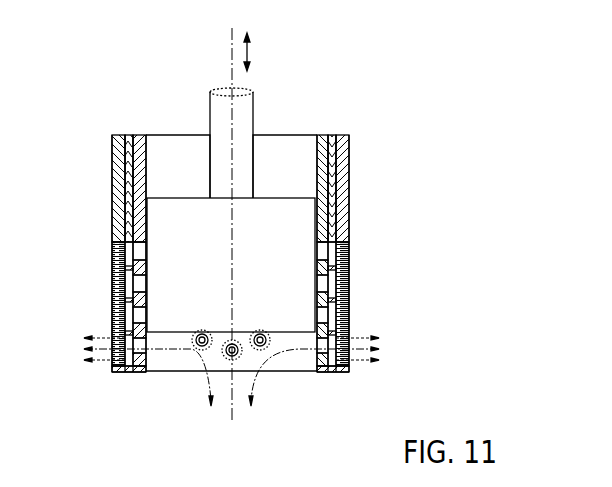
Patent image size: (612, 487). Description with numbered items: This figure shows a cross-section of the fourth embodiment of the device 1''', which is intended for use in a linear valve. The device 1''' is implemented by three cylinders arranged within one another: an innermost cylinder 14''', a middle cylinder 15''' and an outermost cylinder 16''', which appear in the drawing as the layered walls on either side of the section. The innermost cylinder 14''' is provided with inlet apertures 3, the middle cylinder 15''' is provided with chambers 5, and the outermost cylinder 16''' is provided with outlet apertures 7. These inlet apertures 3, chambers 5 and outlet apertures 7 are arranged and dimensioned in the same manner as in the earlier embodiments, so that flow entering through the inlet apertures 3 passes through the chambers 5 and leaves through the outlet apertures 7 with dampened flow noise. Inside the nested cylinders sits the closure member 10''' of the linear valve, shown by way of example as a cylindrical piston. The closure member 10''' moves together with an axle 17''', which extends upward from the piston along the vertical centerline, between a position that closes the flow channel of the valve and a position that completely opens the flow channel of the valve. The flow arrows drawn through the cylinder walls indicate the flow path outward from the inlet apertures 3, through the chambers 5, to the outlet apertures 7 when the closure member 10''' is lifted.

The device 1''' is at (430, 67).
The inlet apertures 3 is at (146, 251).
The chambers 5 is at (136, 266).
The outlet apertures 7 is at (113, 248).
The closure member 10''' is at (231, 236).
The innermost cylinder 14''' is at (230, 232).
The middle cylinder 15''' is at (241, 226).
The outermost cylinder 16''' is at (239, 237).
The axle 17''' is at (257, 132).